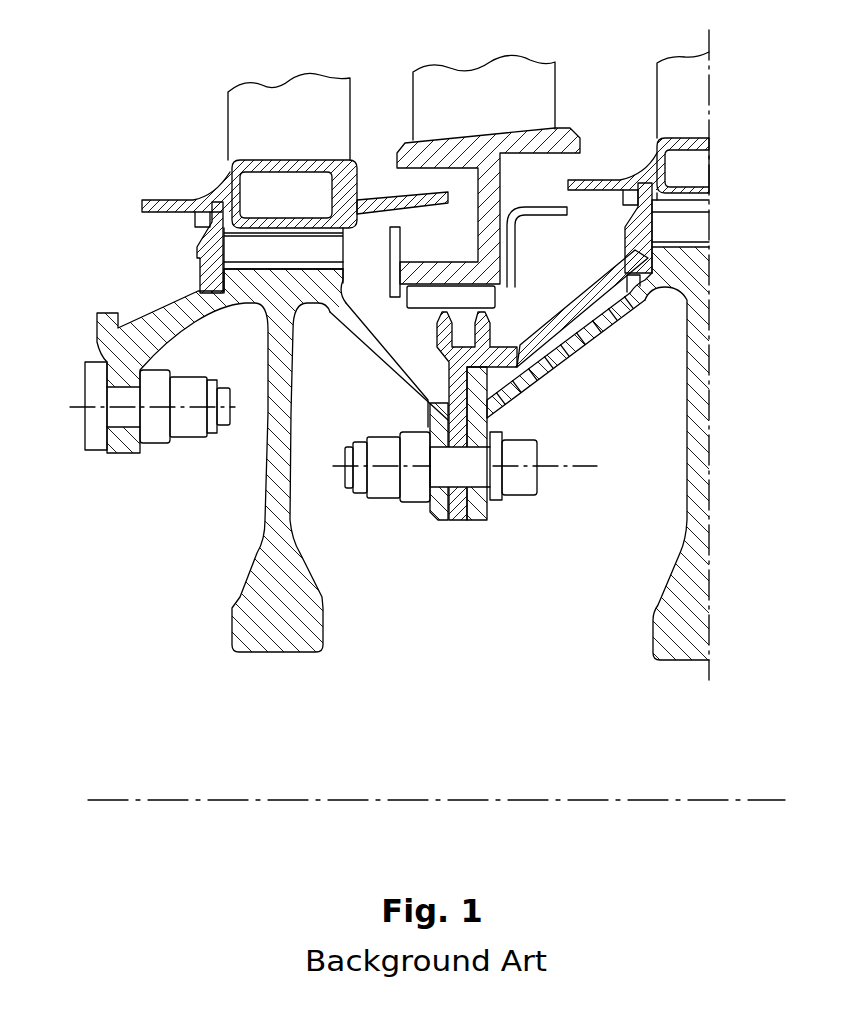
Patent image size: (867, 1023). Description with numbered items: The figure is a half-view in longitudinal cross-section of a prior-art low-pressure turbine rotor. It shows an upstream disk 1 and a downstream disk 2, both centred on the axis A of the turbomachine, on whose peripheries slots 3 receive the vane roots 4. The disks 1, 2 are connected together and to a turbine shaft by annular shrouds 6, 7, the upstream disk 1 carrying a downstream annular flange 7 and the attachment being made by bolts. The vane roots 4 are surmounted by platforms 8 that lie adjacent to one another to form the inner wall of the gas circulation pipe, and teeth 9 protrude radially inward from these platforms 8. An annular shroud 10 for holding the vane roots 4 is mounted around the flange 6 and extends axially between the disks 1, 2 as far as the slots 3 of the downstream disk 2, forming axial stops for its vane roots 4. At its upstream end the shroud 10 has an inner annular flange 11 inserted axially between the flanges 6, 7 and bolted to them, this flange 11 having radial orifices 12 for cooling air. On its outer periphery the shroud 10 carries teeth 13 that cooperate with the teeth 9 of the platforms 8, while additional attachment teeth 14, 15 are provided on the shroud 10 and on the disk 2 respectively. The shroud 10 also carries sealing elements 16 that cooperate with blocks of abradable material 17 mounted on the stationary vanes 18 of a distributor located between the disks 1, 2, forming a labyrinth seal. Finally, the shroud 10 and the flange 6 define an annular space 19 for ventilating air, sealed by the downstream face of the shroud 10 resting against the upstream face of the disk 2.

The upstream disk 1 is at (260, 570).
The downstream disk 2 is at (695, 538).
The slots 3 is at (318, 268).
The vane roots 4 is at (312, 244).
The annular shroud (flange) 6 is at (540, 378).
The annular shroud (downstream flange) 7 is at (402, 377).
The platforms 8 is at (173, 204).
The teeth 9 is at (201, 216).
The annular shroud 10 is at (580, 290).
The inner annular flange 11 is at (453, 520).
The radial orifices 12 is at (467, 520).
The teeth 13 is at (648, 178).
The additional attachment tooth 14 is at (660, 228).
The additional attachment tooth 15 is at (632, 290).
The sealing elements 16 is at (485, 337).
The blocks of abradable material 17 is at (490, 297).
The stationary vanes 18 is at (482, 77).
The annular space 19 is at (605, 335).
The axis A is at (688, 800).